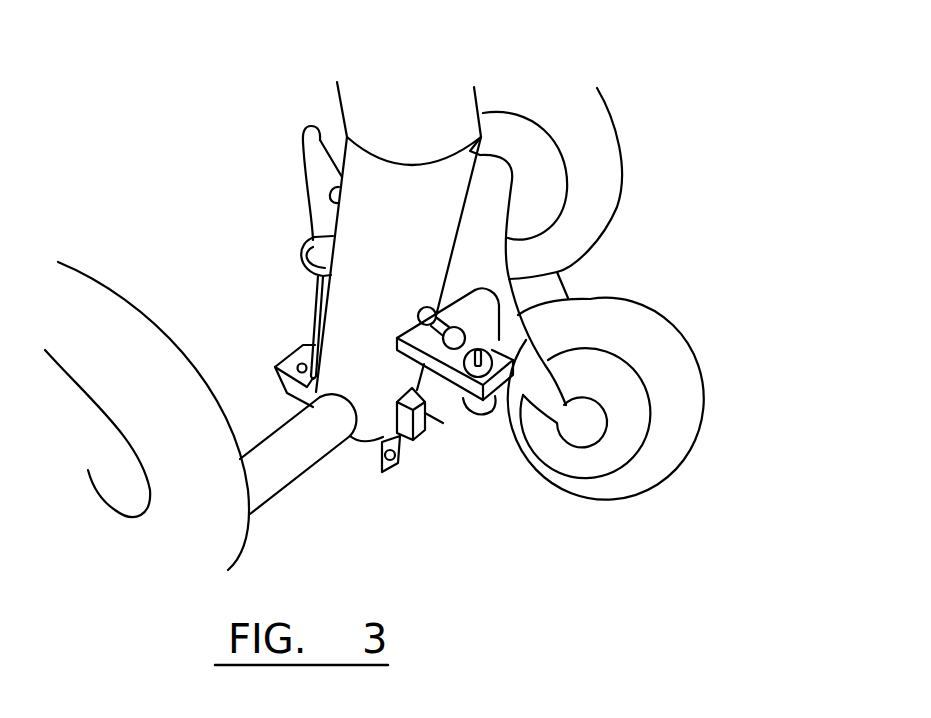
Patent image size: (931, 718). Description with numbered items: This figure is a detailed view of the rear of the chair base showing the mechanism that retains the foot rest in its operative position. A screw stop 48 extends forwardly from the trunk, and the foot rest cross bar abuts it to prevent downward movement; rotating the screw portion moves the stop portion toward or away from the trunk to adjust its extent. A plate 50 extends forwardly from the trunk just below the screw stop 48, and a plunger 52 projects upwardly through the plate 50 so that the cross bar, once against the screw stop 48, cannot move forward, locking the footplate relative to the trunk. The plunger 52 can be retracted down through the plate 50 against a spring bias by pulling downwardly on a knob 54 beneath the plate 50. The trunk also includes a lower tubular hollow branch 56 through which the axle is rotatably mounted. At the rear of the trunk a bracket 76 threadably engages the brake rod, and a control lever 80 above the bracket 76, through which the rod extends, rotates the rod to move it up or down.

The screw stop 48 is at (453, 400).
The plate 50 is at (497, 385).
The plunger 52 is at (477, 350).
The knob 54 is at (481, 418).
The lower tubular hollow branch 56 is at (285, 462).
The bracket 76 is at (300, 261).
The control lever 80 is at (300, 137).